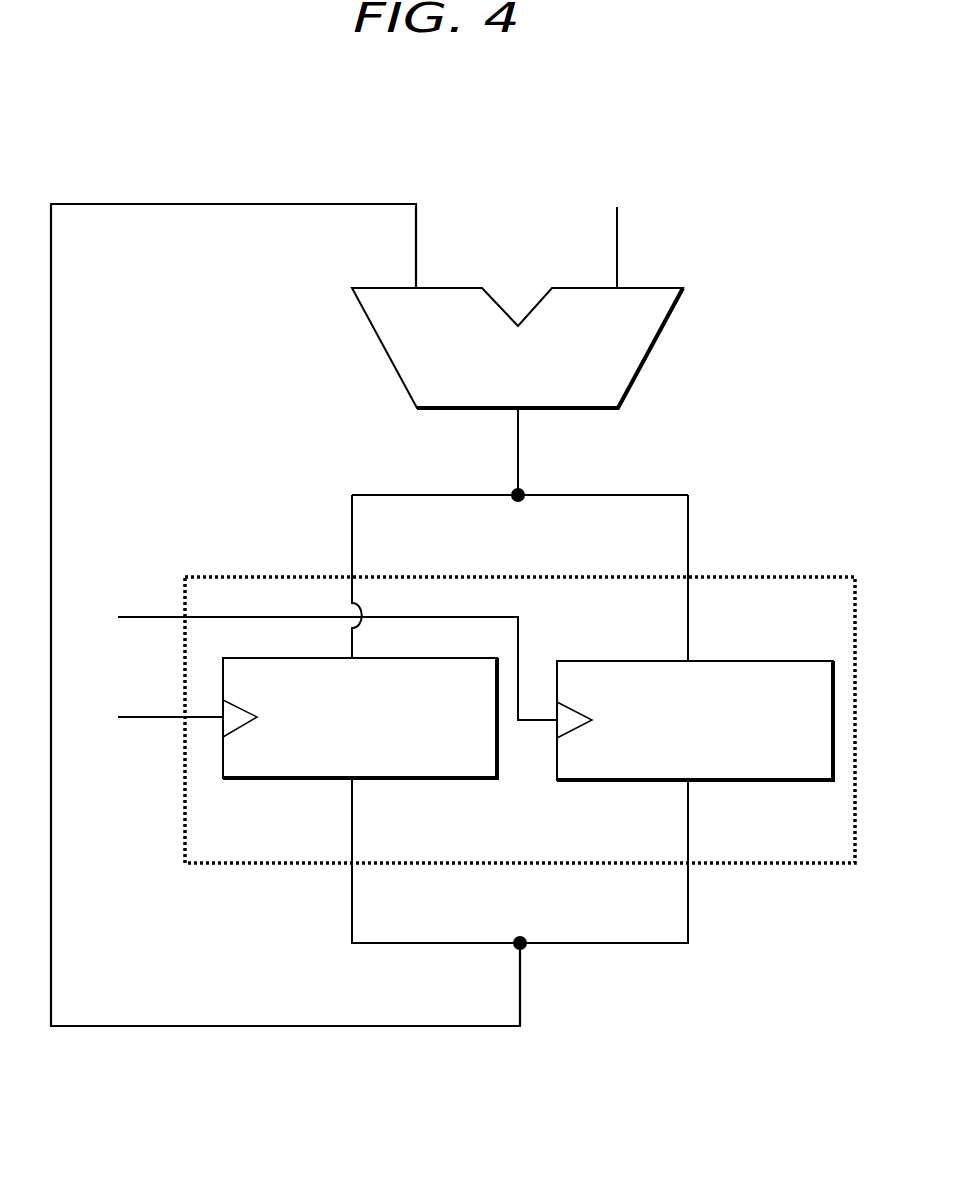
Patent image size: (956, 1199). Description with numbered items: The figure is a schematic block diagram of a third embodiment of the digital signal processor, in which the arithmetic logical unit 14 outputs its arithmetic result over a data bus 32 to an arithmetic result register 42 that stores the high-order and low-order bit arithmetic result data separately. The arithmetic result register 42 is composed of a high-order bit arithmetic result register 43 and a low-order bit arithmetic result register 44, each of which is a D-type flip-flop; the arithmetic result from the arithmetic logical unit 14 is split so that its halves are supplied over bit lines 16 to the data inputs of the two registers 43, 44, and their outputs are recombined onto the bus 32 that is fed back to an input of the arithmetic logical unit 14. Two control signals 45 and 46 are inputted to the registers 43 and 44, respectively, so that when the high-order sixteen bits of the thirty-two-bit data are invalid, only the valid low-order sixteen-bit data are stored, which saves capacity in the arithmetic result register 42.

The arithmetic logical unit 14 is at (387, 353).
The bit line 16 is at (702, 893).
The bus 32 is at (403, 252).
The arithmetic result register 42 is at (788, 575).
The high-order bit arithmetic result register 43 is at (252, 778).
The low-order bit arithmetic result register 44 is at (765, 780).
The control signal 45 is at (133, 615).
The control signal 46 is at (135, 720).